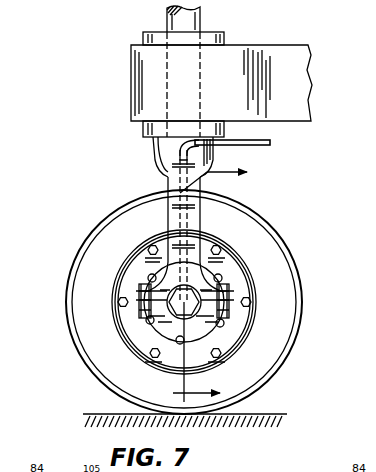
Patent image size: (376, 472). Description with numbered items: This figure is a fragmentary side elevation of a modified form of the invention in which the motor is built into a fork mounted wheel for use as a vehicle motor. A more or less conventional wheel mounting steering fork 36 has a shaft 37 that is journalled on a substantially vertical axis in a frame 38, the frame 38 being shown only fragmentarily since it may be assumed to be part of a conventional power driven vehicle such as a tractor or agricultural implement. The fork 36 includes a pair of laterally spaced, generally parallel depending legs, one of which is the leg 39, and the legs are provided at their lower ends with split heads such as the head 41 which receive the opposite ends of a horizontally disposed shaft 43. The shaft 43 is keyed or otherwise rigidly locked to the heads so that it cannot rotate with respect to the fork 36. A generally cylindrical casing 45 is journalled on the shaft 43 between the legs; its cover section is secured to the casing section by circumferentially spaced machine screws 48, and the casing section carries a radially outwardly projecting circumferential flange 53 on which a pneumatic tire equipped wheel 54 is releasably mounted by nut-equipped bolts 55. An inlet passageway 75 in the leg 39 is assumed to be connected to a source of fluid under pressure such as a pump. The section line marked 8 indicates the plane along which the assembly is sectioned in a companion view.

The shaft 37 is at (170, 22).
The frame 38 is at (284, 82).
The wheel mounting steering fork 36 is at (154, 171).
The depending leg 39 is at (196, 213).
The inlet passageway 75 is at (176, 211).
The pneumatic tire equipped wheel 54 is at (110, 303).
The circumferential flange 53 is at (140, 326).
The split head 41 is at (166, 320).
The shaft 43 is at (198, 290).
The cylindrical casing 45 is at (232, 328).
The nut-equipped bolts 55 is at (149, 246).
The machine screws 48 is at (149, 278).
The section line 8- 8 is at (226, 282).